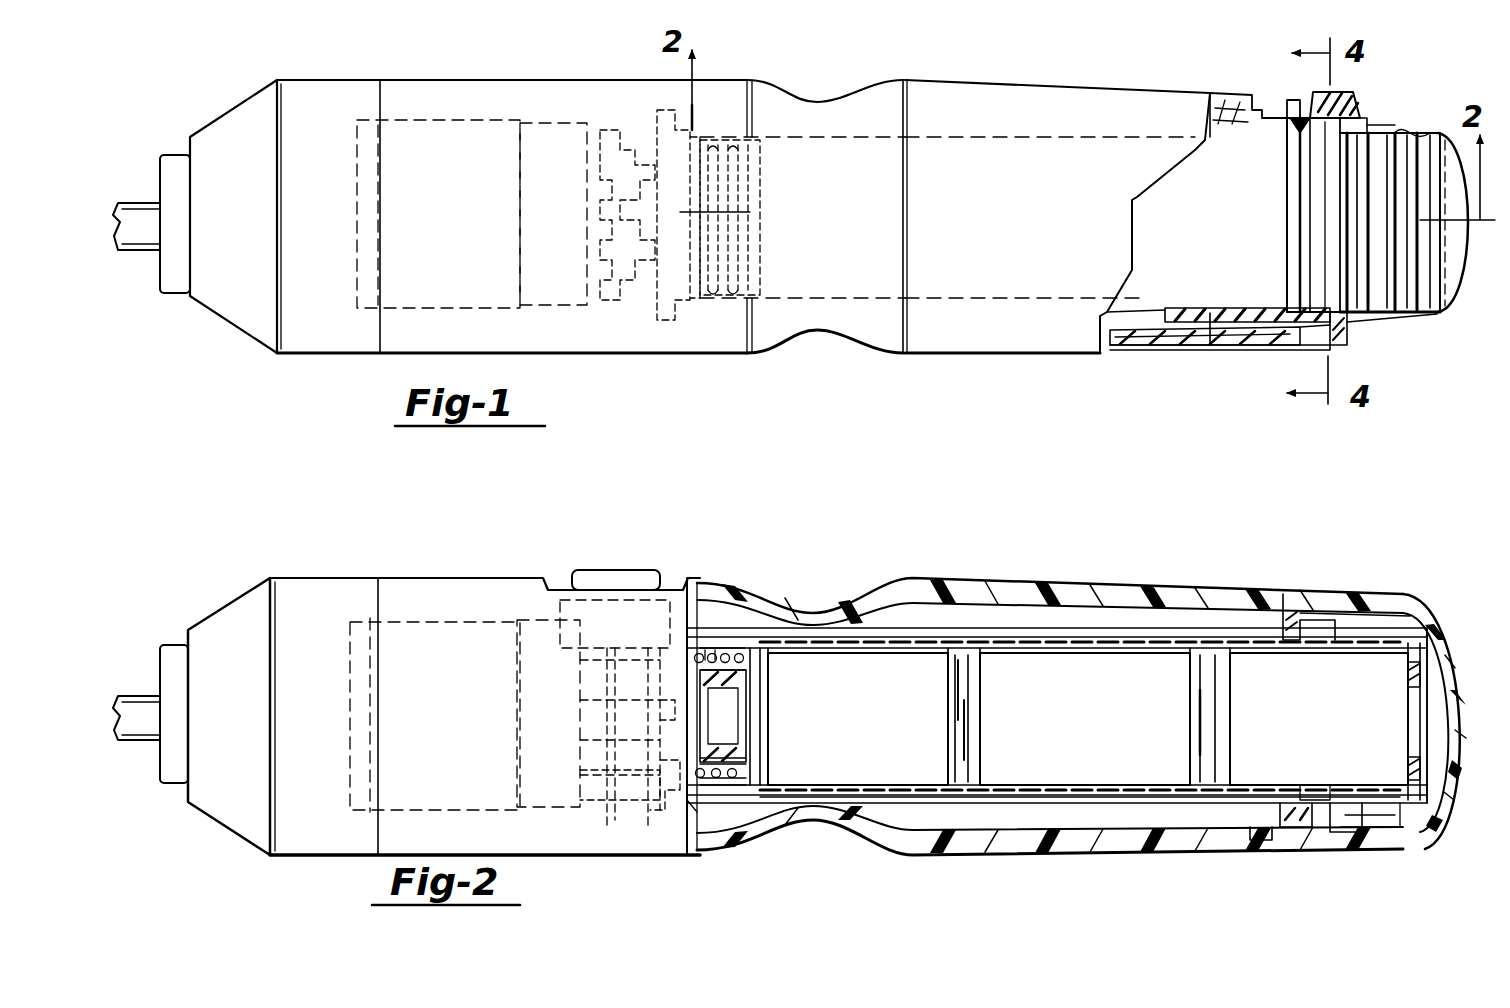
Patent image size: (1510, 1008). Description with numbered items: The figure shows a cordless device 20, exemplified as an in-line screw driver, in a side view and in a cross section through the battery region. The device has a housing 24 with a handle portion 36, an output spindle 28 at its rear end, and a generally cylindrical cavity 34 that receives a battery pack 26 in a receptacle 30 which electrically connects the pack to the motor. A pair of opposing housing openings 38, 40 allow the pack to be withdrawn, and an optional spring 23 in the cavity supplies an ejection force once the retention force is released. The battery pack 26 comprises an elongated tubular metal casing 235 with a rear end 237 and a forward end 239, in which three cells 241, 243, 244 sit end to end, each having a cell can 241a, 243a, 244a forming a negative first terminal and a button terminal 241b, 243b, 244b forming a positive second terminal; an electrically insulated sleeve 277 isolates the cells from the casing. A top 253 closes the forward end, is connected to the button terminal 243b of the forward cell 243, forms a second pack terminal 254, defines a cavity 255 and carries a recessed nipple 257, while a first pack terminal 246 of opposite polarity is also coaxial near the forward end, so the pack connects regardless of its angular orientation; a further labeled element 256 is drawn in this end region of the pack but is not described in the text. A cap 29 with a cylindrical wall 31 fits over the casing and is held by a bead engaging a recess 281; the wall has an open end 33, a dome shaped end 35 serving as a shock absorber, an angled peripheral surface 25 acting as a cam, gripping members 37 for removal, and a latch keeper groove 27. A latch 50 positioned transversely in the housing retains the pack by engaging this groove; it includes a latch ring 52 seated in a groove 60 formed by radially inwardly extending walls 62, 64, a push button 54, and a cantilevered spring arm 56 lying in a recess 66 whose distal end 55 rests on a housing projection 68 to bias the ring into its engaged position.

In FIG. 1, the cordless device 20 is at (953, 362).
In FIG. 2, the cordless device 20 is at (947, 558).
In FIG. 1, the spring 23 is at (720, 290).
In FIG. 2, the spring 23 is at (720, 790).
In FIG. 1, the housing 24 is at (1068, 85).
In FIG. 1, the angled peripheral surface 25 is at (1310, 212).
In FIG. 2, the angled peripheral surface 25 is at (1292, 817).
In FIG. 1, the battery pack 26 is at (1147, 297).
In FIG. 1, the latch keeper groove 27 is at (1298, 128).
In FIG. 1, the output spindle 28 is at (192, 138).
In FIG. 1, the cap 29 is at (1442, 320).
In FIG. 2, the cap 29 is at (1428, 790).
In FIG. 1, the receptacle 30 is at (682, 192).
In FIG. 2, the receptacle 30 is at (698, 700).
In FIG. 2, the cylindrical wall 31 is at (1357, 640).
In FIG. 1, the open end 33 is at (1297, 242).
In FIG. 1, the cylindrical cavity 34 is at (1252, 98).
In FIG. 1, the dome shaped end 35 is at (1465, 250).
In FIG. 2, the dome shaped end 35 is at (1310, 640).
In FIG. 1, the handle portion 36 is at (1025, 209).
In FIG. 2, the handle portion 36 is at (1070, 600).
In FIG. 1, the gripping members 37 is at (1345, 133).
In FIG. 2, the gripping members 37 is at (1397, 640).
In FIG. 1, the housing opening 38 is at (1400, 130).
In FIG. 1, the housing opening 40 is at (1380, 318).
In FIG. 1, the latch 50 is at (1365, 108).
In FIG. 1, the latch ring 52 is at (1372, 122).
In FIG. 1, the push button 54 is at (1345, 100).
In FIG. 1, the distal end 55 is at (1140, 340).
In FIG. 1, the cantilevered spring arm 56 is at (1250, 350).
In FIG. 2, the groove 60 is at (1340, 820).
In FIG. 2, the radially inwardly extending wall 62 is at (1352, 822).
In FIG. 2, the radially inwardly extending wall 64 is at (1292, 820).
In FIG. 1, the recess 66 is at (1333, 322).
In FIG. 1, the housing projection 68 is at (1195, 345).
In FIG. 2, the tubular metal casing 235 is at (800, 640).
In FIG. 2, the rear end 237 is at (1410, 810).
In FIG. 2, the forward end 239 is at (742, 642).
In FIG. 2, the cell 241 is at (1258, 760).
In FIG. 2, the cell can 241a is at (1373, 728).
In FIG. 2, the button terminal 241b is at (1207, 720).
In FIG. 2, the forward cell 243 is at (908, 765).
In FIG. 2, the cell can 243a is at (885, 761).
In FIG. 2, the button terminal 243b is at (748, 701).
In FIG. 2, the cell 244 is at (1068, 768).
In FIG. 2, the cell can 244a is at (1072, 743).
In FIG. 2, the button terminal 244b is at (958, 712).
In FIG. 2, the first pack terminal 246 is at (690, 808).
In FIG. 2, the top 253 is at (690, 735).
In FIG. 2, the second pack terminal 254 is at (702, 720).
In FIG. 2, the cavity 255 is at (700, 642).
In FIG. 2, the switch lead 256 is at (702, 775).
In FIG. 2, the nipple 257 is at (705, 660).
In FIG. 2, the electrically insulated sleeve 277 is at (808, 797).
In FIG. 2, the recess 281 is at (1322, 795).